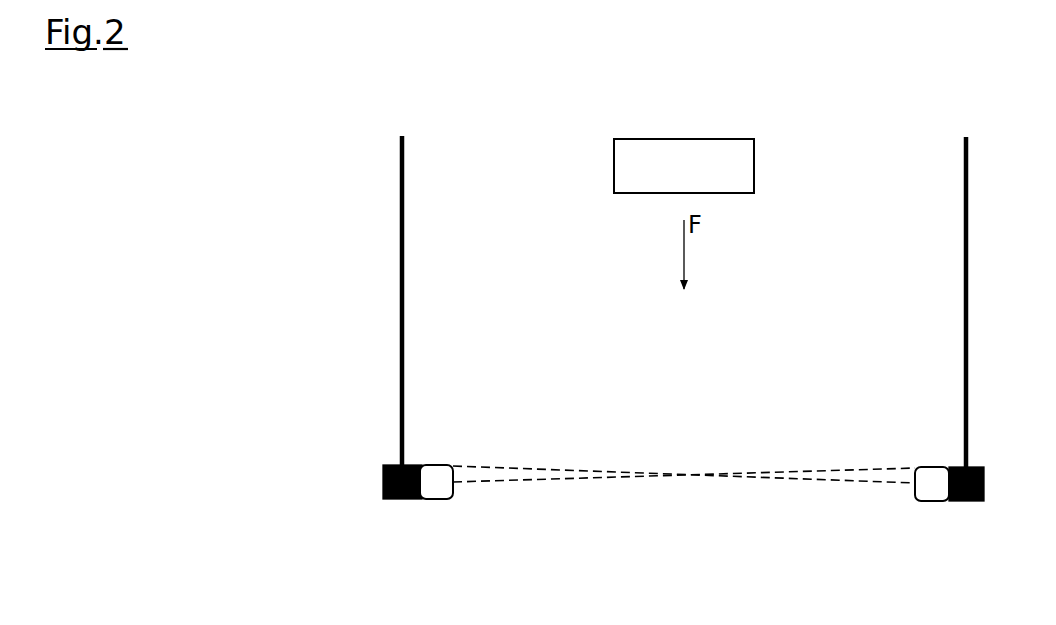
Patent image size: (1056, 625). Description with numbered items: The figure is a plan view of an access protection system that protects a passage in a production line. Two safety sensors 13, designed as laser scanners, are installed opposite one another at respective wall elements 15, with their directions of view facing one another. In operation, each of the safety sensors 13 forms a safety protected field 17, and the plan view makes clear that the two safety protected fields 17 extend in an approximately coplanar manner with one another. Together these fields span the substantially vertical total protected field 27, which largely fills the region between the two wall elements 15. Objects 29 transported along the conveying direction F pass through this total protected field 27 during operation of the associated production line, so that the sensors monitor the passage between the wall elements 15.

The safety sensor 13 is at (436, 492).
The wall element 15 is at (400, 206).
The safety protected field 17 is at (514, 484).
The total protected field 27 is at (765, 470).
The object 29 is at (698, 182).